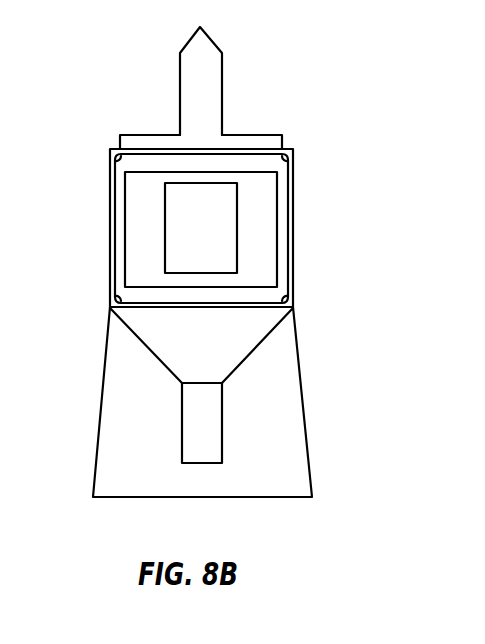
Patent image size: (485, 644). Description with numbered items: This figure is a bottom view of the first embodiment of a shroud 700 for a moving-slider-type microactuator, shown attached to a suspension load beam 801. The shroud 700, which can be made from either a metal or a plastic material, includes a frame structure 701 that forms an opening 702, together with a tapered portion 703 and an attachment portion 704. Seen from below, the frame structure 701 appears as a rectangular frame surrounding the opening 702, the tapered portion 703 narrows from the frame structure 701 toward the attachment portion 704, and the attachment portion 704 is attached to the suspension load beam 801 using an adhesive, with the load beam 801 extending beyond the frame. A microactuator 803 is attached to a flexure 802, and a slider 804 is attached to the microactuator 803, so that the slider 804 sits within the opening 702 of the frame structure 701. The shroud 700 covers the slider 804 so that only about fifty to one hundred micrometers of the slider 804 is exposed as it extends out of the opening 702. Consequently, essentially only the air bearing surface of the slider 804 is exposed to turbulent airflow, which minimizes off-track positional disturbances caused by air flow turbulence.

The suspension load beam 801 is at (210, 85).
The frame structure 701 is at (293, 180).
The microactuator 803 is at (263, 226).
The shroud 700 is at (291, 252).
The opening 702 is at (288, 284).
The slider 804 is at (177, 232).
The tapered portion 703 is at (243, 325).
The attachment portion 704 is at (210, 447).
The flexure 802 is at (283, 497).